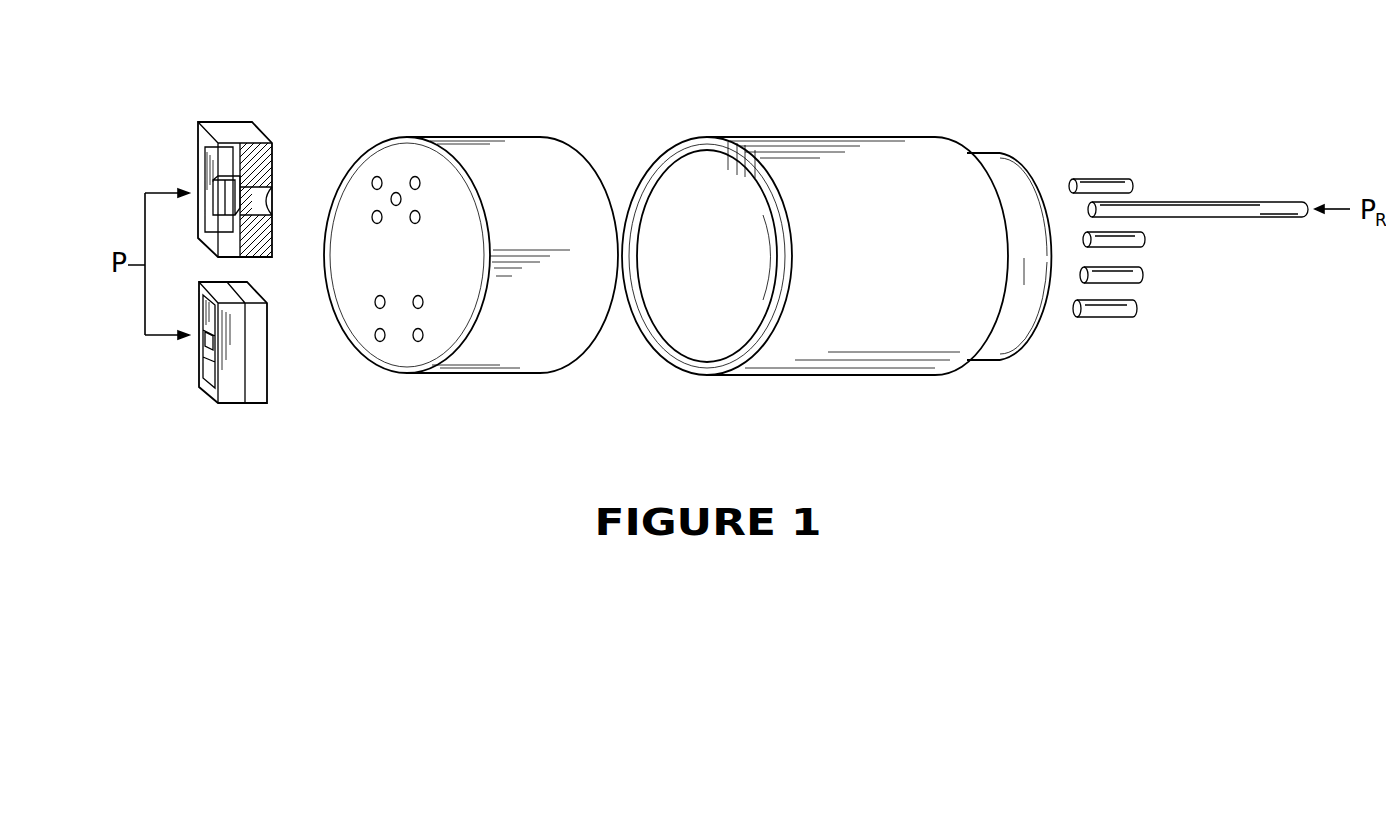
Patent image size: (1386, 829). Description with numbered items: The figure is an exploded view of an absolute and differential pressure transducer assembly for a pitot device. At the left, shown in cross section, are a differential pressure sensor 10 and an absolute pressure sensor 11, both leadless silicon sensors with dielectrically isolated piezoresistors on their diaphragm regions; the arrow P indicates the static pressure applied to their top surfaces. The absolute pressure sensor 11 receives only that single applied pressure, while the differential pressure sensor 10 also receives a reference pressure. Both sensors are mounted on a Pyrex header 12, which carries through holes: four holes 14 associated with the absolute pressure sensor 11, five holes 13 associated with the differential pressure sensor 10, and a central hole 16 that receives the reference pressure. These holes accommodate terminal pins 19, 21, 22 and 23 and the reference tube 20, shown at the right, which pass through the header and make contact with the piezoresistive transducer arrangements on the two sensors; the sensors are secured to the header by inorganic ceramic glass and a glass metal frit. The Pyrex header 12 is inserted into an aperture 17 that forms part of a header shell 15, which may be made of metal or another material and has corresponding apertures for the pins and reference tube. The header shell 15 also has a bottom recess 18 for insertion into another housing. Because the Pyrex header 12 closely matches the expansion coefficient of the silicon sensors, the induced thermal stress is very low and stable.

The differential pressure sensor 10 is at (232, 133).
The absolute pressure sensor 11 is at (232, 403).
The Pyrex header 12 is at (466, 137).
The holes 13 is at (374, 163).
The holes 14 is at (396, 360).
The header shell 15 is at (855, 190).
The central hole 16 is at (396, 192).
The aperture 17 is at (692, 210).
The bottom recess 18 is at (992, 165).
The pin 19 is at (1109, 185).
The reference tube 20 is at (1170, 207).
The pin 21 is at (1140, 240).
The pin 22 is at (1140, 278).
The pin 23 is at (1104, 312).